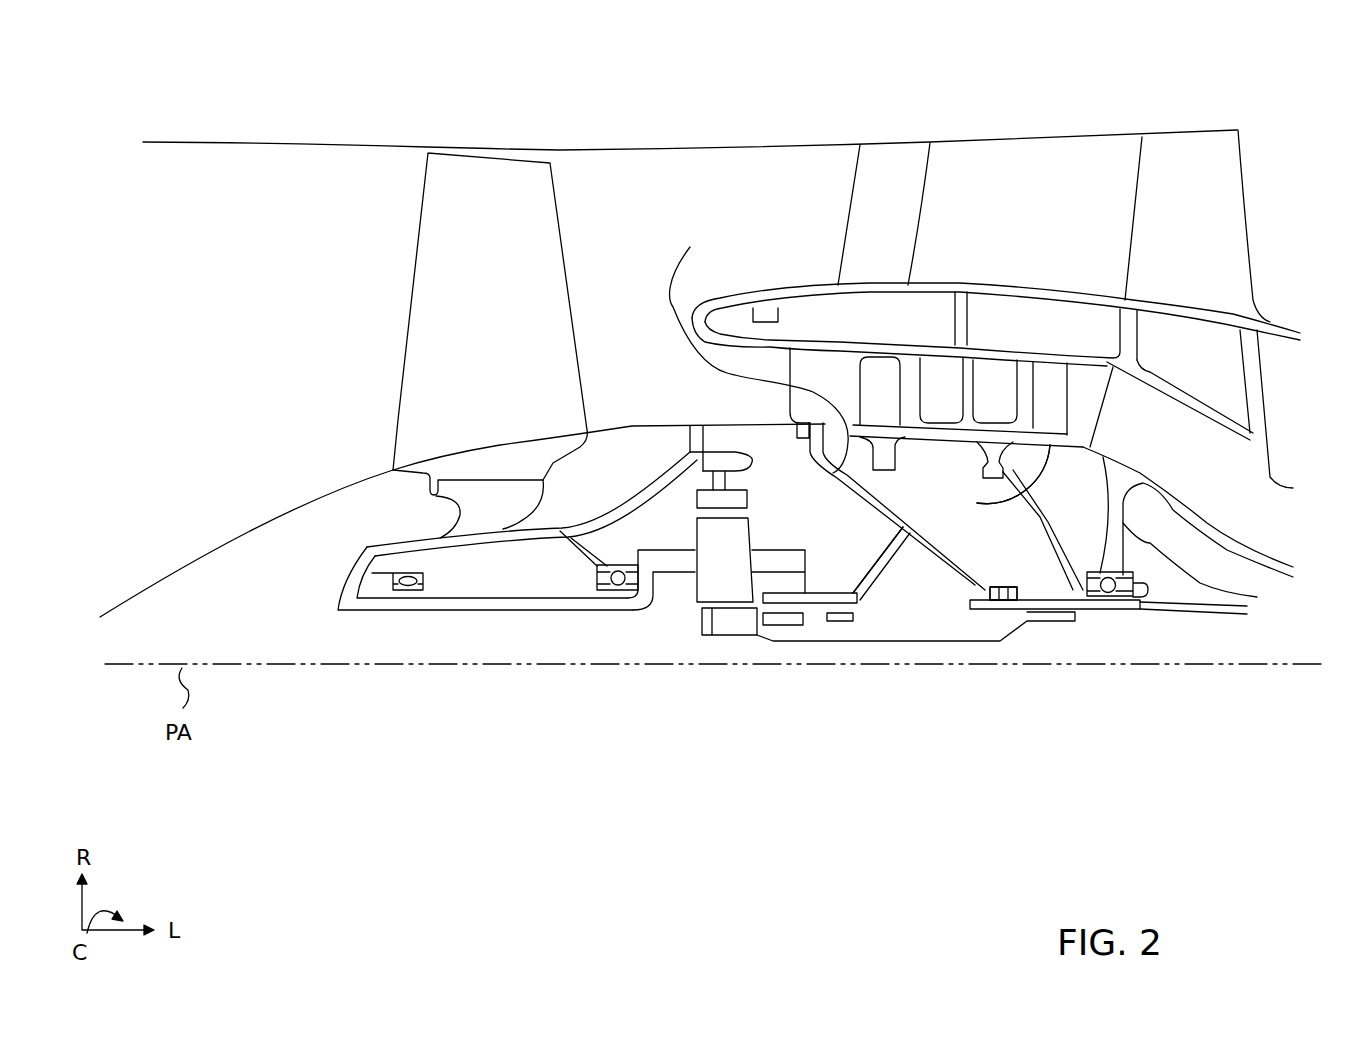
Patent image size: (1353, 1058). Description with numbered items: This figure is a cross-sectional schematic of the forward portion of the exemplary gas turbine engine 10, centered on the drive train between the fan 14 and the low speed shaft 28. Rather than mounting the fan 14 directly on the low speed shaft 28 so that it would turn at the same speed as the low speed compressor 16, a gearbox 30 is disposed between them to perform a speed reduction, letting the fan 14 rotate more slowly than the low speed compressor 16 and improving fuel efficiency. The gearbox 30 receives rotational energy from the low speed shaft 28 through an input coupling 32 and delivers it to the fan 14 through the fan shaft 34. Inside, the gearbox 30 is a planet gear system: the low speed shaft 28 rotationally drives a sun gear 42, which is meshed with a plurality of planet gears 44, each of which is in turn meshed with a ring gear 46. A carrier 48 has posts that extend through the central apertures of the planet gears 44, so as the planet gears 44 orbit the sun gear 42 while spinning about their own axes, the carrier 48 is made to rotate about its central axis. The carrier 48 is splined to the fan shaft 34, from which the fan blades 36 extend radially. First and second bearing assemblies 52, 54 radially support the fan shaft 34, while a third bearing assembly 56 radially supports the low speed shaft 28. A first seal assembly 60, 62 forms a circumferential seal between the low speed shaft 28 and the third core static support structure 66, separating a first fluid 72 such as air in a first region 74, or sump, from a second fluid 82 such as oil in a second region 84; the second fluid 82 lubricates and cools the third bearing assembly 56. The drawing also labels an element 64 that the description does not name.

The gas turbine engine 10 is at (1280, 97).
The fan 14 is at (288, 647).
The low speed compressor 16 is at (915, 425).
The low speed shaft 28 is at (1207, 612).
The gearbox 30 is at (750, 687).
The input coupling 32 is at (880, 642).
The fan shaft 34 is at (460, 612).
The fan blades 36 is at (403, 367).
The sun gear 42 is at (719, 637).
The planet gears 44 is at (693, 587).
The ring gear 46 is at (695, 506).
The carrier 48 is at (652, 550).
The first bearing assembly 52 is at (390, 577).
The second bearing assembly 54 is at (592, 588).
The third bearing assembly 56 is at (1135, 598).
The first seal assembly 60 is at (995, 576).
The first seal assembly 62 is at (1003, 593).
The aft shaft wall 64 is at (1257, 597).
The third core static support structure 66 is at (759, 344).
The first fluid 72 is at (907, 590).
The first region 74 is at (878, 560).
The second fluid 82 is at (1047, 433).
The second region 84 is at (1013, 474).